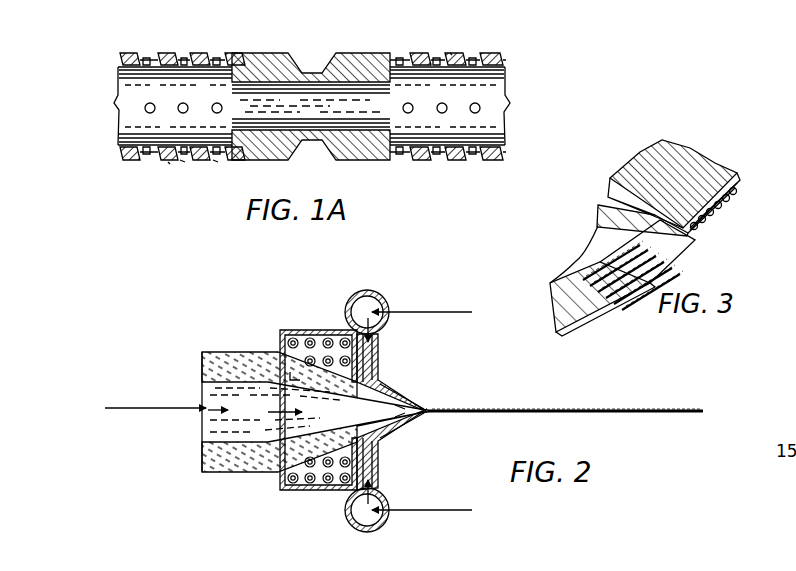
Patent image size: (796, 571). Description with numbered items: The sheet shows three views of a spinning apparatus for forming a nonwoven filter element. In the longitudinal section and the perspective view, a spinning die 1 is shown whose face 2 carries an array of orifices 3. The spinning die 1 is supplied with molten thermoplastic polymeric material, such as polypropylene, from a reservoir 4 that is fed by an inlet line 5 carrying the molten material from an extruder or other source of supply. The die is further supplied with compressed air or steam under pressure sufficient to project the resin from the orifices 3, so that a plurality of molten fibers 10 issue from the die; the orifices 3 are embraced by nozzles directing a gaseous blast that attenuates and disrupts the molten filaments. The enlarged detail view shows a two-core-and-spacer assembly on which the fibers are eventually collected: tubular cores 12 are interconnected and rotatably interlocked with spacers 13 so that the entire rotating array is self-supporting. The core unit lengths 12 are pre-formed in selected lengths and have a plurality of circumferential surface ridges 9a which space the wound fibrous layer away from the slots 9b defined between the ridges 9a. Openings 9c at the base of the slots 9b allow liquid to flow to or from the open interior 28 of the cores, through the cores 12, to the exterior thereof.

In FIG. 2, the spinning die 1 is at (393, 368).
In FIG. 3, the spinning die 1 is at (610, 316).
In FIG. 2, the face 2 is at (409, 389).
In FIG. 3, the face 2 is at (716, 172).
In FIG. 2, the orifices 3 is at (433, 416).
In FIG. 3, the orifices 3 is at (668, 254).
In FIG. 2, the reservoir 4 is at (254, 419).
In FIG. 2, the inlet line 5 is at (205, 388).
In FIG. 1A, the circumferential surface ridges 9a is at (234, 53).
In FIG. 1A, the slots 9b is at (148, 163).
In FIG. 1A, the openings 9c is at (218, 162).
In FIG. 2, the molten fibers 10 is at (537, 408).
In FIG. 1A, the tubular cores 12 is at (170, 163).
In FIG. 1A, the spacers 13 is at (297, 53).
In FIG. 1A, the open interior 28 is at (208, 133).